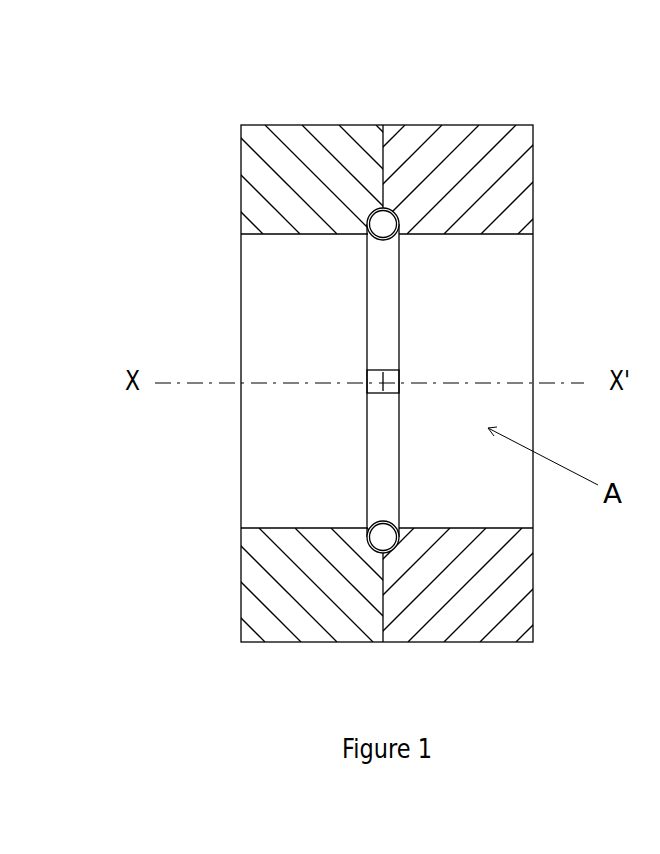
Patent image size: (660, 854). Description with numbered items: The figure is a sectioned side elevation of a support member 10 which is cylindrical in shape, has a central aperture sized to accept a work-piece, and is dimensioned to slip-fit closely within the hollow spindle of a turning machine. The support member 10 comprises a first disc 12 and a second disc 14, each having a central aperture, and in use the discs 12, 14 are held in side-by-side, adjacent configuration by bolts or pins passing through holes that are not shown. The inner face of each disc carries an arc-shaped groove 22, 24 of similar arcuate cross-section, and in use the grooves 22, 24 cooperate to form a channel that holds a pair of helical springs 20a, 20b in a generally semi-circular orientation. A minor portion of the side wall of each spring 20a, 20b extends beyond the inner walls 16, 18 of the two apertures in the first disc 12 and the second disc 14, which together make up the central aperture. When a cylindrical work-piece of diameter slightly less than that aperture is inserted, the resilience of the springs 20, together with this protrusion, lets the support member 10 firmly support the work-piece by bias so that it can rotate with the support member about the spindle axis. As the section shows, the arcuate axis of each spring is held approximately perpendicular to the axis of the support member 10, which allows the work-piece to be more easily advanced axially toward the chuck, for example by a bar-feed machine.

The support member 10 is at (208, 128).
The first disc 12 is at (308, 102).
The second disc 14 is at (473, 102).
The inner wall of first disc aperture 16 is at (290, 232).
The inner wall of second disc aperture 18 is at (503, 236).
The springs 20 is at (383, 460).
The helical spring 20a is at (399, 237).
The helical spring 20b is at (398, 523).
The arc-shaped groove 22 is at (378, 226).
The arc-shaped groove 24 is at (392, 541).